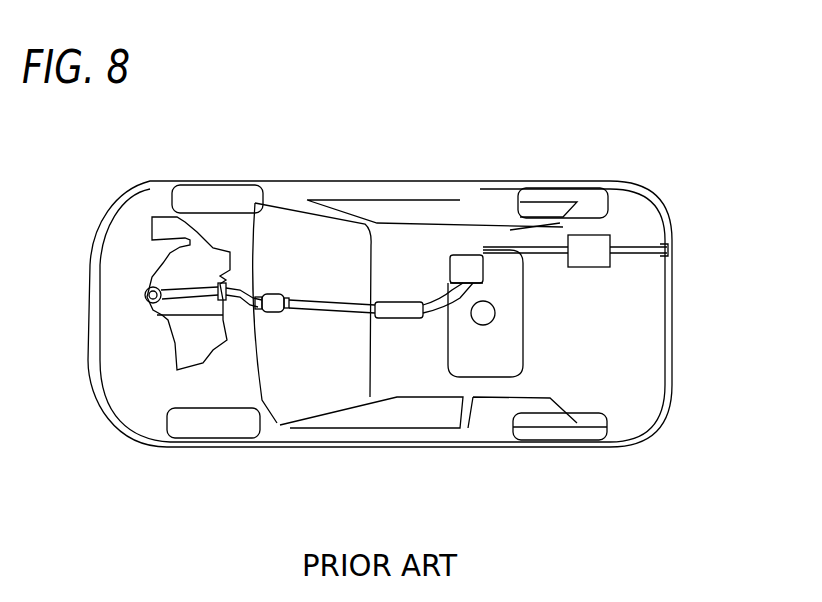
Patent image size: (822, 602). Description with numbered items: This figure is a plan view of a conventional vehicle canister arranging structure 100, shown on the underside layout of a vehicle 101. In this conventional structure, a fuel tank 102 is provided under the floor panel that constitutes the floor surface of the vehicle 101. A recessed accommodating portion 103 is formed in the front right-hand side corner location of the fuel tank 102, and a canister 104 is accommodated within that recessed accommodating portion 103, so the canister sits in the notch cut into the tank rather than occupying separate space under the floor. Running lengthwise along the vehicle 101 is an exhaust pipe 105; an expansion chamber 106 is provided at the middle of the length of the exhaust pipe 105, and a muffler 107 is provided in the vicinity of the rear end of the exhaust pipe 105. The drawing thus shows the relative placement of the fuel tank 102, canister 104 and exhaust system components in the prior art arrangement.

The vehicle canister arranging structure 100 is at (470, 238).
The vehicle 101 is at (357, 181).
The fuel tank 102 is at (523, 325).
The recessed accommodating portion 103 is at (476, 266).
The canister 104 is at (450, 255).
The exhaust pipe 105 is at (338, 330).
The expansion chamber 106 is at (401, 319).
The muffler 107 is at (612, 236).